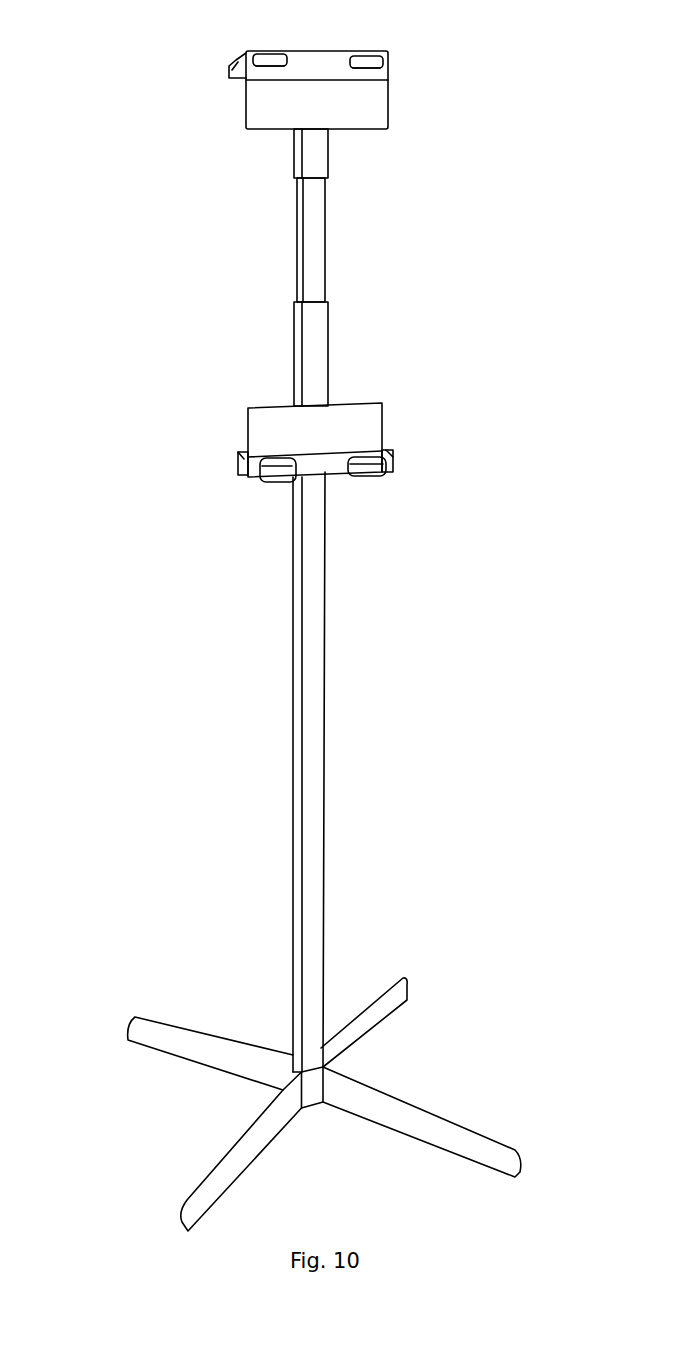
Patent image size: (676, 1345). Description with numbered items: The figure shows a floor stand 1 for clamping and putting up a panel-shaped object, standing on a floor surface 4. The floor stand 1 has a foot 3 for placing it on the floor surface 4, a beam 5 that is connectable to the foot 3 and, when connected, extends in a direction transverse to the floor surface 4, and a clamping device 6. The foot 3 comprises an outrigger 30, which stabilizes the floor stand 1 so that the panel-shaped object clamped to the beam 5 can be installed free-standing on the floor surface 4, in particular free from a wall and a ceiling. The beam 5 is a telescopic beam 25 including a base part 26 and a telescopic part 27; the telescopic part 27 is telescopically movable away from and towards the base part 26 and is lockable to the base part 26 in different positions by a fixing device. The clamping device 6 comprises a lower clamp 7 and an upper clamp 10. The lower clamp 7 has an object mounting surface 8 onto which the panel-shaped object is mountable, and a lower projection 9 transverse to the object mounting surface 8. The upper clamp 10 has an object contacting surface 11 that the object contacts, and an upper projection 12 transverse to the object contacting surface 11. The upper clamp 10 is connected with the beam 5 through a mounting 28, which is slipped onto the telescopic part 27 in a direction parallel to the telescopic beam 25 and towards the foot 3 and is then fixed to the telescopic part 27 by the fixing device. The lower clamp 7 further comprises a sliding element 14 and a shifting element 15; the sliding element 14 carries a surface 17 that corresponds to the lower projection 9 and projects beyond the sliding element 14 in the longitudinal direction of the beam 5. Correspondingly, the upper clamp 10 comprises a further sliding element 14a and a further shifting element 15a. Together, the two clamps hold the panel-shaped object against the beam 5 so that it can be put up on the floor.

The floor stand 1 is at (309, 621).
The foot 3 is at (282, 1089).
The floor surface 4 is at (333, 1186).
The beam 5 is at (380, 772).
The clamping device 6 is at (336, 287).
The lower clamp 7 is at (304, 447).
The object mounting surface 8 is at (326, 445).
The lower projection 9 is at (281, 395).
The upper clamp 10 is at (327, 116).
The object contacting surface 11 is at (327, 110).
The upper projection 12 is at (286, 149).
The sliding element 14 is at (184, 469).
The further sliding element 14a is at (189, 57).
The shifting element 15 is at (441, 474).
The further shifting element 15a is at (355, 40).
The surface 17 is at (379, 420).
The telescopic beam 25 is at (352, 292).
The base part 26 is at (339, 354).
The telescopic part 27 is at (353, 240).
The mounting 28 is at (352, 156).
The outrigger 30 is at (422, 1120).